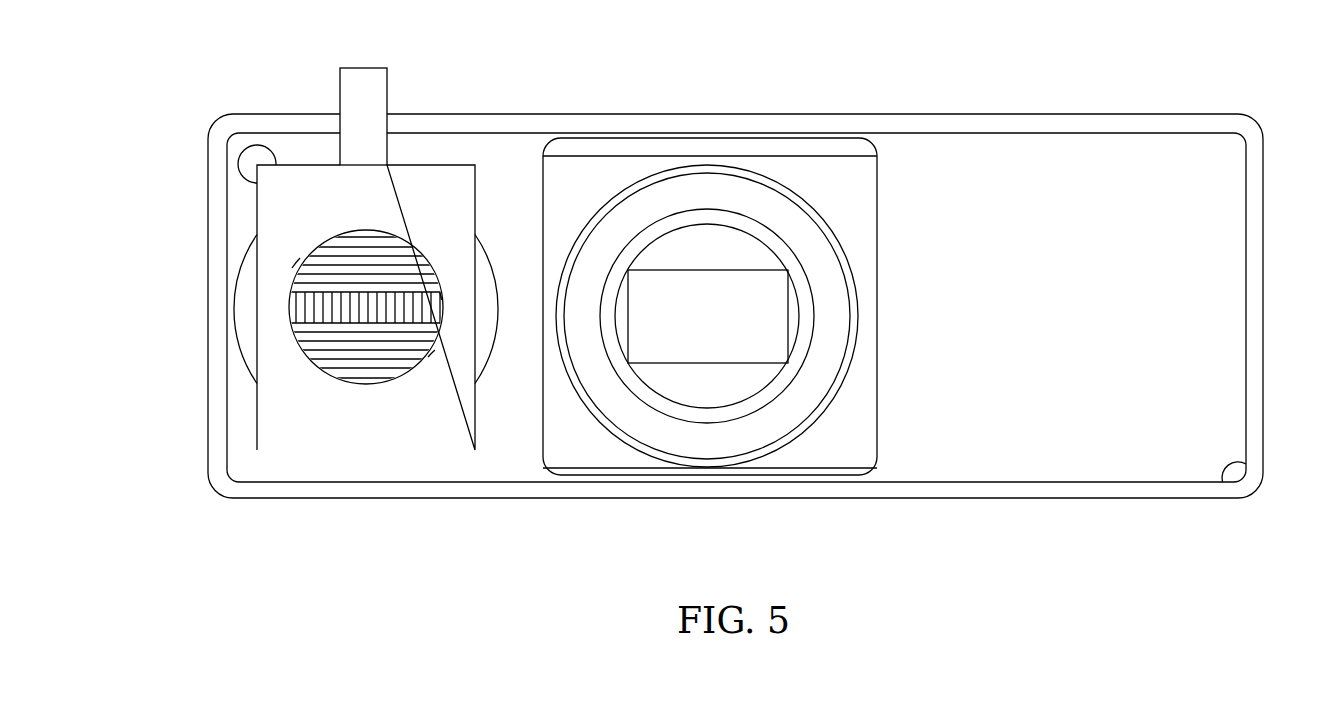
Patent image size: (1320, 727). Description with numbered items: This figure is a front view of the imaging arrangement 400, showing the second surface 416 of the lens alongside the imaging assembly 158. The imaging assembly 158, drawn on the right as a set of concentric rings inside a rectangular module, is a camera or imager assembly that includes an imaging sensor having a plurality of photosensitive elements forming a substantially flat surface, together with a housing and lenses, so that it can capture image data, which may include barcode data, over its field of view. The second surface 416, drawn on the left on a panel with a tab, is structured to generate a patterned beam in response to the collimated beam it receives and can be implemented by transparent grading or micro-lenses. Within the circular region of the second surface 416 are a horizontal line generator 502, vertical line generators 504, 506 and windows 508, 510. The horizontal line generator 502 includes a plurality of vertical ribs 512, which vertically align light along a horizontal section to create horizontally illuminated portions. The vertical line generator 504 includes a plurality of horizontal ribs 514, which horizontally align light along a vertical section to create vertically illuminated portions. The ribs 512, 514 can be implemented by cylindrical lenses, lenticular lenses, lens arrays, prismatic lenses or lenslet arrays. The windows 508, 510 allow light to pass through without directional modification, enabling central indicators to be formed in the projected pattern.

The imaging arrangement 400 is at (767, 75).
The second surface 416 is at (278, 423).
The imaging assembly 158 is at (703, 382).
The horizontal line generator 502 is at (291, 310).
The vertical line generator 504 is at (295, 275).
The vertical line generator 506 is at (300, 358).
The window 508 is at (442, 292).
The window 510 is at (432, 355).
The vertical ribs 512 is at (314, 314).
The horizontal ribs 514 is at (322, 258).